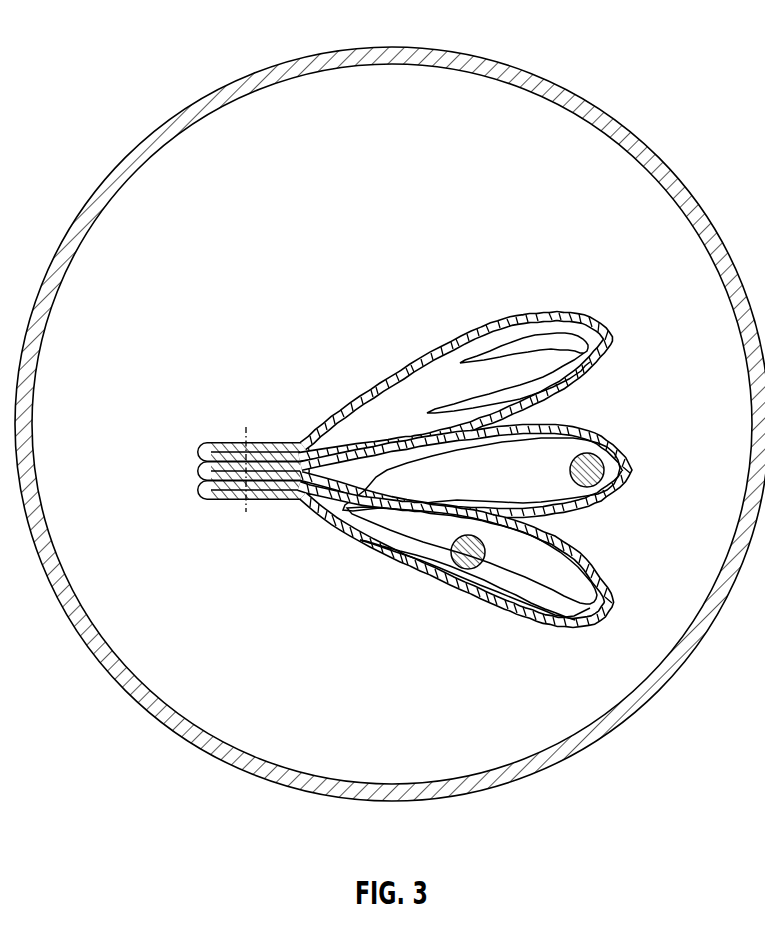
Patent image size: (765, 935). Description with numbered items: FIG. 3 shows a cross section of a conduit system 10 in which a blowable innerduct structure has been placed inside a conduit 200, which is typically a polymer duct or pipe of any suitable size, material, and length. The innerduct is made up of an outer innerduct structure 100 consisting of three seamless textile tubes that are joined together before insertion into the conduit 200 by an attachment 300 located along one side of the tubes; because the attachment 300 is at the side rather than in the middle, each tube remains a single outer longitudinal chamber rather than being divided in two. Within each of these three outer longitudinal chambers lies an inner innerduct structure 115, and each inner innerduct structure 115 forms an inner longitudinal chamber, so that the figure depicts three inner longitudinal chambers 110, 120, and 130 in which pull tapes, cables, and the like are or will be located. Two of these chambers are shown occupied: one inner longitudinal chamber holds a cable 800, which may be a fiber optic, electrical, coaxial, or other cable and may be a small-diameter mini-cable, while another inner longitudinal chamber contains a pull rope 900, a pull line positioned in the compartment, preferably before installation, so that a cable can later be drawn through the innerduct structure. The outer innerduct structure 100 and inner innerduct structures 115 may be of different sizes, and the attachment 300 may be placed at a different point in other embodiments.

The conduit system 10 is at (390, 404).
The outer innerduct structure 100 is at (450, 482).
The inner longitudinal chamber 110 is at (535, 381).
The inner innerduct structure 115 is at (498, 487).
The inner longitudinal chamber 120 is at (499, 470).
The inner longitudinal chamber 130 is at (455, 568).
The conduit 200 is at (548, 77).
The attachment 300 is at (245, 441).
The cable 800 is at (462, 568).
The pull rope 900 is at (604, 468).